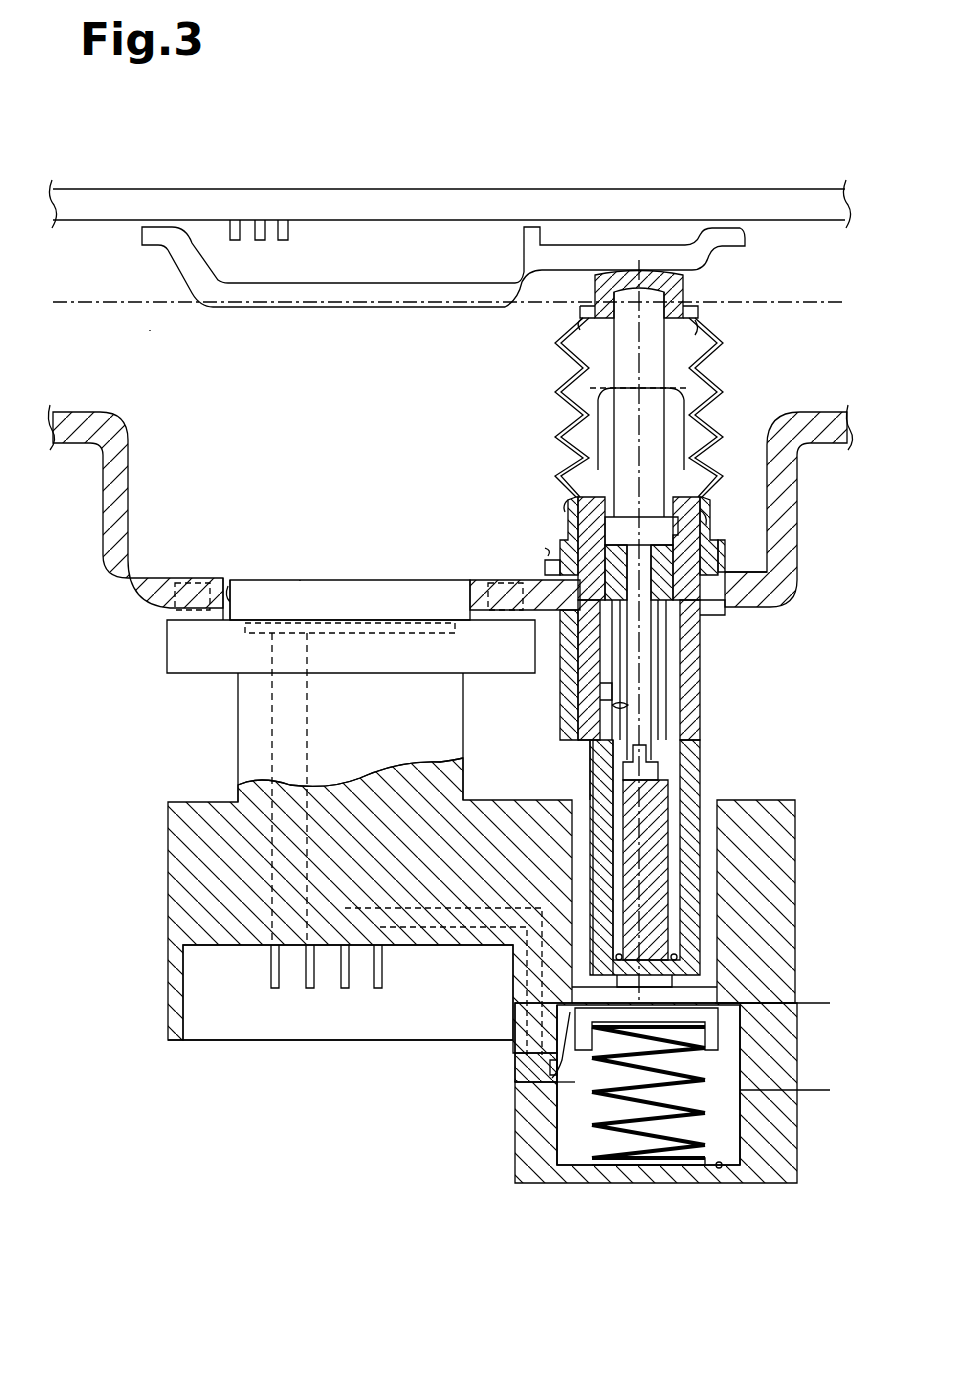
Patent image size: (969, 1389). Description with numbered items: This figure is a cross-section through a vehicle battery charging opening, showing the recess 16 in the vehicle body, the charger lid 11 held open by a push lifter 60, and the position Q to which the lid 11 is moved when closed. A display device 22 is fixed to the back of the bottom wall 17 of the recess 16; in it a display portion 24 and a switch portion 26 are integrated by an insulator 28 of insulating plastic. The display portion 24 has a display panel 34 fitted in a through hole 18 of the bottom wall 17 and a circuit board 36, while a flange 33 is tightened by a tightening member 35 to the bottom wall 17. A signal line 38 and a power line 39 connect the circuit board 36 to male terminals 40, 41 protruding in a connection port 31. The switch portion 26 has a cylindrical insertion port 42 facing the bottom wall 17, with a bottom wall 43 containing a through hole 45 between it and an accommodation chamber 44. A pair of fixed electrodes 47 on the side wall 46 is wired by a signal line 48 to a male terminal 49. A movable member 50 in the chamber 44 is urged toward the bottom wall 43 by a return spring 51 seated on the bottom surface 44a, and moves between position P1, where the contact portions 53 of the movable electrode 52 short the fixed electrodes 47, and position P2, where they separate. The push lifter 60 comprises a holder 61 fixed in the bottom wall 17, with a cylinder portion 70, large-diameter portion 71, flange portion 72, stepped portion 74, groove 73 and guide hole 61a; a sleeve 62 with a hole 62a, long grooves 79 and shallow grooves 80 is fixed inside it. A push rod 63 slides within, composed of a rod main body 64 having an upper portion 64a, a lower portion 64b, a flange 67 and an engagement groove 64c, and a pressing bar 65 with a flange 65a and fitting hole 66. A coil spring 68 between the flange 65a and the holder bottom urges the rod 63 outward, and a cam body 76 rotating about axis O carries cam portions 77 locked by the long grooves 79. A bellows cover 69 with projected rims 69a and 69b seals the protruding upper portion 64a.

The charger lid 11 is at (538, 186).
The position Q is at (794, 287).
The axis O is at (648, 272).
The recess 16 is at (185, 354).
The bottom wall 17 is at (76, 410).
The through hole 18 is at (228, 578).
The display device 22 is at (134, 743).
The display portion 24 is at (376, 573).
The switch portion 26 is at (441, 1075).
The insulator 28 is at (168, 852).
The connection port 31 is at (183, 970).
The flange 33 is at (168, 664).
The display panel 34 is at (285, 580).
The tightening member 35 is at (176, 610).
The circuit board 36 is at (380, 634).
The signal line 38 is at (272, 714).
The power line 39 is at (307, 708).
The male terminal 40 is at (275, 990).
The male terminal 41 is at (310, 990).
The insertion port 42 is at (713, 803).
The bottom wall 43 is at (672, 990).
The accommodation chamber 44 is at (736, 1146).
The bottom surface 44a is at (716, 1170).
The through hole 45 is at (695, 1030).
The side wall 46 is at (518, 1166).
The fixed electrode 47 is at (530, 1080).
The signal line 48 is at (470, 935).
The male terminal 49 is at (345, 990).
The movable member 50 is at (720, 1050).
The return spring 51 is at (628, 1128).
The movable electrode 52 is at (566, 1062).
The contact portion 53 is at (545, 1094).
The push lifter 60 is at (480, 393).
The holder 61 is at (700, 745).
The guide hole 61a is at (670, 975).
The sleeve 62 is at (700, 470).
The hole 62a is at (570, 470).
The push rod 63 is at (700, 440).
The rod main body 64 is at (651, 698).
The upper portion 64a is at (695, 365).
The lower portion 64b is at (651, 655).
The engagement groove 64c is at (575, 320).
The pressing bar 65 is at (660, 732).
The flange 65a is at (718, 630).
The fitting hole 66 is at (620, 706).
The flange 67 is at (574, 505).
The coil spring 68 is at (585, 600).
The cover 69 is at (720, 345).
The projected rim 69a is at (698, 322).
The projected rim 69b is at (576, 548).
The cylinder portion 70 is at (700, 864).
The large-diameter portion 71 is at (578, 740).
The flange portion 72 is at (584, 522).
The groove 73 is at (716, 556).
The stepped portion 74 is at (600, 755).
The cam body 76 is at (714, 520).
The cam portion 77 is at (760, 573).
The long groove 79 is at (690, 665).
The shallow groove 80 is at (600, 687).
The position P1 is at (789, 1003).
The position P2 is at (802, 1090).